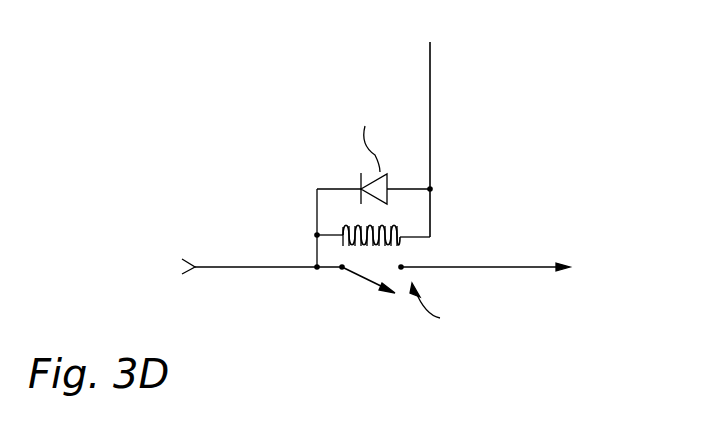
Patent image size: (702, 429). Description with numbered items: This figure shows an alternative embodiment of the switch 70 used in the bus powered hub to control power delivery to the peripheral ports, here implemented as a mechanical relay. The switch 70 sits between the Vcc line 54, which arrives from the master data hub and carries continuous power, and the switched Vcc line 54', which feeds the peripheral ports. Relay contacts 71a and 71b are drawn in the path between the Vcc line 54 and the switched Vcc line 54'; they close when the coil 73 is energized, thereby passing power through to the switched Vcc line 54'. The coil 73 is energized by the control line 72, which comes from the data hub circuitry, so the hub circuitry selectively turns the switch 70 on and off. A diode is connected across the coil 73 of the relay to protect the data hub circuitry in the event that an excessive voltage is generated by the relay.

The Vcc line 54 is at (262, 278).
The switched Vcc line 54' is at (485, 298).
The switch 70 is at (386, 219).
The relay contact 71a is at (342, 270).
The relay contact 71b is at (401, 275).
The control line 72 is at (430, 105).
The coil 73 is at (395, 248).